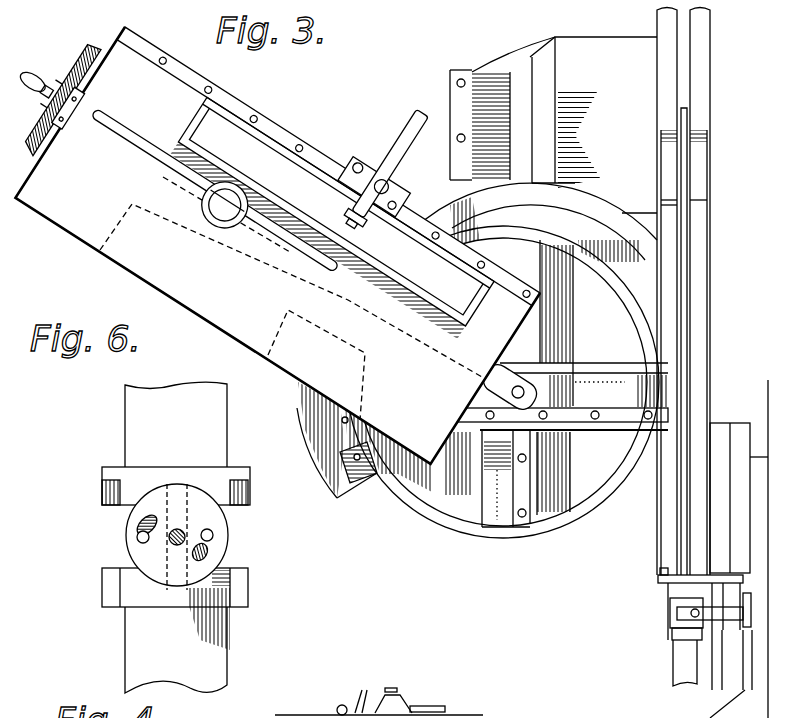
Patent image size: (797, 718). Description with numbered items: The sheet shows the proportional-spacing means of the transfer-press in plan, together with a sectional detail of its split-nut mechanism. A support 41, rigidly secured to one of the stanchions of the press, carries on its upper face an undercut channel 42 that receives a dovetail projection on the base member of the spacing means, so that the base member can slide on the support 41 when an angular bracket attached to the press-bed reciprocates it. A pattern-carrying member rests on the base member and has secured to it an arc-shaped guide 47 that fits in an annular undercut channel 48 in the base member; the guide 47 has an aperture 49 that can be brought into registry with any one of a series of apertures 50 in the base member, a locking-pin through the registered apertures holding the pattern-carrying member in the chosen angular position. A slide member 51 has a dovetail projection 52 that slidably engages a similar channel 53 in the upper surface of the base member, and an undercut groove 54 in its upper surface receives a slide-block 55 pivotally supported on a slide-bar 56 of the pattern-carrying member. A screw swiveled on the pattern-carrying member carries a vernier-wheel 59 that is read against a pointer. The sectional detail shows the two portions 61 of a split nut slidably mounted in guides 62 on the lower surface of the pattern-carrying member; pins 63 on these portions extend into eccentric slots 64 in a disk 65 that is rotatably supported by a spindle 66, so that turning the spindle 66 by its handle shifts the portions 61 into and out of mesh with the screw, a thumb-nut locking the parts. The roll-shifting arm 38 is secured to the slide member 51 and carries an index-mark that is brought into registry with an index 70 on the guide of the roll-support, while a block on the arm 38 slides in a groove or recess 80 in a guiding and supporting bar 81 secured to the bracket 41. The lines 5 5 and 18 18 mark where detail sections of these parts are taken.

In FIG. 3, the tilting table 18 is at (137, 35).
In FIG. 3, the vernier-wheel 59 is at (90, 55).
In FIG. 3, the slot 5 is at (211, 196).
In FIG. 3, the arc-shaped guide 47 is at (386, 169).
In FIG. 3, the undercut channel 42 is at (513, 78).
In FIG. 3, the support 41 is at (593, 125).
In FIG. 3, the groove or recess 80 is at (682, 68).
In FIG. 3, the guiding and supporting bar 81 is at (700, 105).
In FIG. 3, the roll-shifting arm 38 is at (690, 385).
In FIG. 3, the slide member 51 is at (576, 368).
In FIG. 3, the undercut groove 54 is at (608, 383).
In FIG. 3, the slide-block 55 is at (538, 393).
In FIG. 3, the slide-bar 56 is at (510, 387).
In FIG. 6, the slide-bar 56 is at (130, 413).
In FIG. 3, the aperture 49 is at (342, 420).
In FIG. 3, the series of apertures 50 is at (357, 460).
In FIG. 3, the annular undercut channel 48 is at (372, 478).
In FIG. 3, the dovetail projection 52 is at (502, 442).
In FIG. 3, the channel 53 is at (505, 518).
In FIG. 3, the index 70 is at (670, 613).
In FIG. 6, the disk 65 is at (152, 503).
In FIG. 6, the spindle 66 is at (167, 540).
In FIG. 6, the guides 62 is at (248, 495).
In FIG. 6, the portions of split nut 61 is at (227, 512).
In FIG. 6, the pins 63 is at (213, 537).
In FIG. 6, the eccentric slots 64 is at (206, 554).